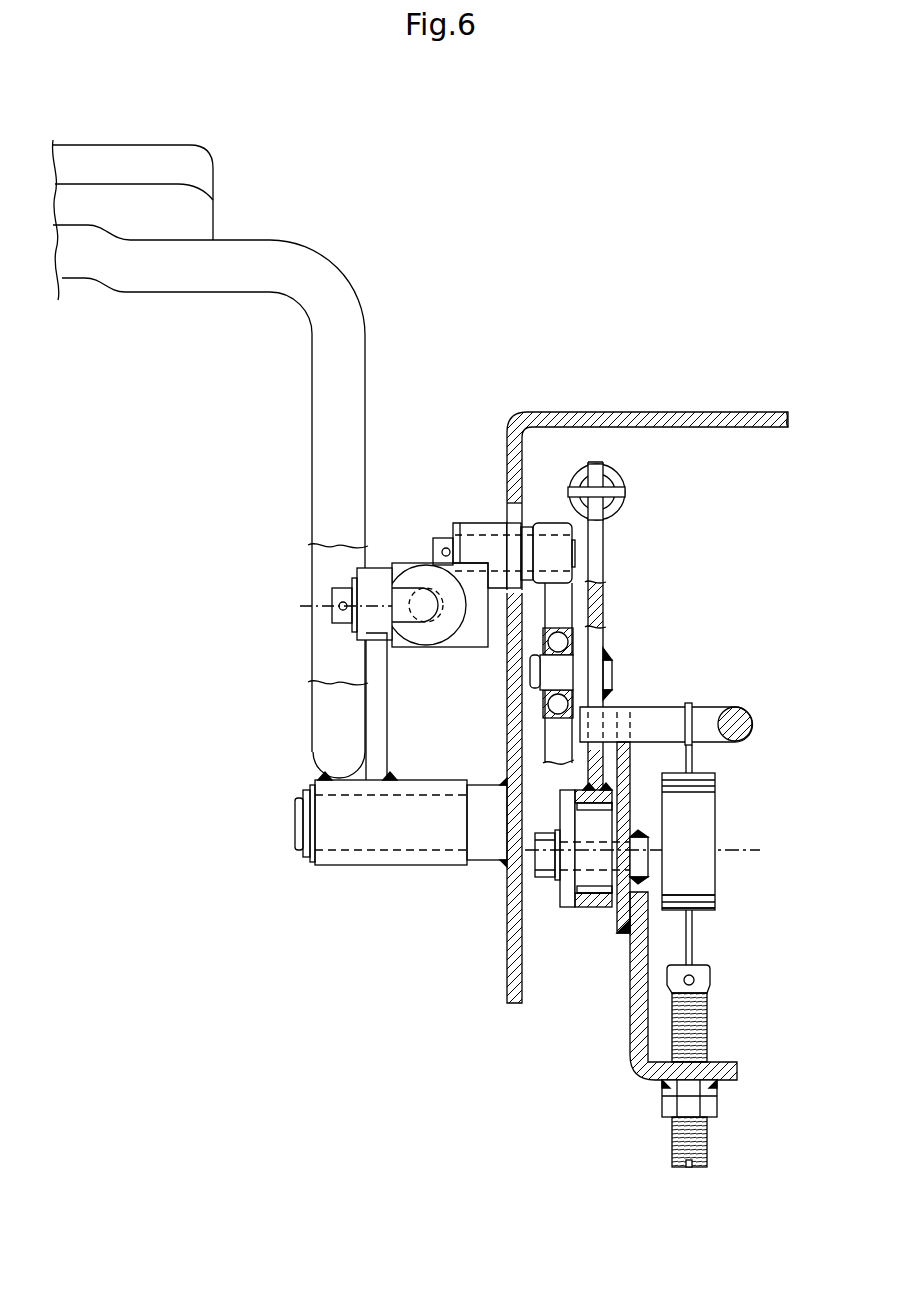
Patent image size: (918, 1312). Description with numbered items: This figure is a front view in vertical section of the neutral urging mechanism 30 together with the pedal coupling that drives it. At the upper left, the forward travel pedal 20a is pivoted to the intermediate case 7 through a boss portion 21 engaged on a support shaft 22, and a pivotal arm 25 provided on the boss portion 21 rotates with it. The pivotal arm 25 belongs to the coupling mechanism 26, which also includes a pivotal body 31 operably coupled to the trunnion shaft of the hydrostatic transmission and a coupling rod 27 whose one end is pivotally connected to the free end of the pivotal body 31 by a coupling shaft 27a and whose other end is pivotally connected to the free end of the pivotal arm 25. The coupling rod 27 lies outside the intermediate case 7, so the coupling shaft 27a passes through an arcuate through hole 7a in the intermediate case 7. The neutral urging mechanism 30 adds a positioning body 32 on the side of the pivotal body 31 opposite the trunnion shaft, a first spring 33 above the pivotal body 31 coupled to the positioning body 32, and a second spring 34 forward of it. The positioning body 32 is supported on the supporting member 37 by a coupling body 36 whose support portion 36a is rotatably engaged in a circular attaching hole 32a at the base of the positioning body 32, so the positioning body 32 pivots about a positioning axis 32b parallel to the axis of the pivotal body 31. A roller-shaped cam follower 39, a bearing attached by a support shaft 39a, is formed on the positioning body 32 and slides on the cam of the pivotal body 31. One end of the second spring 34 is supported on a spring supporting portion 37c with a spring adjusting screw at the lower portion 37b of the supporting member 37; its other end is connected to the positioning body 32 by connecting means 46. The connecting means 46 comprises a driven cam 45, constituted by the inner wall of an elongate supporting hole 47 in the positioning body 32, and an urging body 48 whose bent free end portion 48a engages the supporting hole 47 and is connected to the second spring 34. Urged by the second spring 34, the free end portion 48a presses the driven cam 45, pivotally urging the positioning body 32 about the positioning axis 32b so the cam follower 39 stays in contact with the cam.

The intermediate case 7 is at (618, 412).
The arcuate through hole 7a is at (507, 512).
The forward travel pedal 20a is at (128, 145).
The boss portion 21 is at (380, 867).
The support shaft 22 is at (296, 826).
The pivotal arm 25 is at (382, 705).
The coupling mechanism 26 is at (474, 467).
The coupling rod 27 is at (433, 612).
The coupling shaft 27a is at (447, 538).
The neutral urging mechanism 30 is at (602, 615).
The pivotal body 31 is at (567, 597).
The positioning body 32 is at (597, 542).
The attaching hole 32a is at (572, 877).
The positioning axis 32b is at (666, 852).
The first spring 33 is at (615, 473).
The second spring 34 is at (717, 897).
The coupling body 36 is at (560, 818).
The support portion 36a is at (597, 883).
The supporting member 37 is at (630, 807).
The lower portion 37b is at (720, 1062).
The spring supporting portion 37c is at (707, 1005).
The cam follower 39 is at (543, 712).
The support shaft 39a is at (527, 677).
The driven cam 45 is at (653, 660).
The connecting means 46 is at (704, 676).
The supporting hole 47 is at (603, 680).
The urging body 48 is at (754, 705).
The free end portion 48a is at (640, 707).